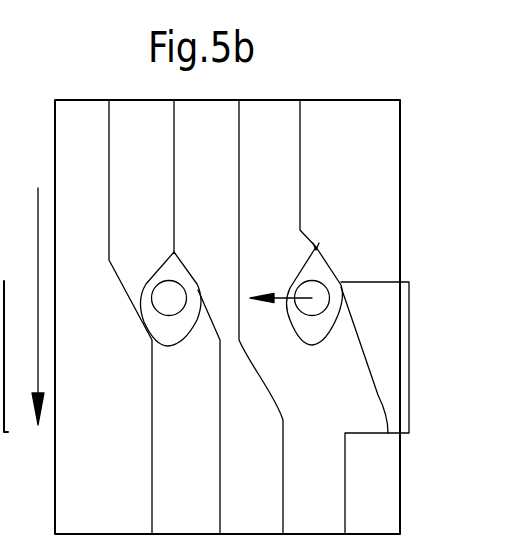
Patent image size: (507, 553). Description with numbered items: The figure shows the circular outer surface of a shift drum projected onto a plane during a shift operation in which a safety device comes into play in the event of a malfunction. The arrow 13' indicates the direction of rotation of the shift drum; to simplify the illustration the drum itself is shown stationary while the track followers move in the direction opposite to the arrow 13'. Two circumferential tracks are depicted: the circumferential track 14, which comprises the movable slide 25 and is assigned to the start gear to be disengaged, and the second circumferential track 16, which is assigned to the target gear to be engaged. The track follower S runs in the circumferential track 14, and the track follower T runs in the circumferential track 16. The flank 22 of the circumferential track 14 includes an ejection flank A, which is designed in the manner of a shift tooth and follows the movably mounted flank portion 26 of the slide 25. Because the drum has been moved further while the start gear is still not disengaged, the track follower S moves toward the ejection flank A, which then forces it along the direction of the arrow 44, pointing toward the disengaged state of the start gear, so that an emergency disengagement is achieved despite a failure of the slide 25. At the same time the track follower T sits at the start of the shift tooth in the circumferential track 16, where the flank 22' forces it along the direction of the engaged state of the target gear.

The circumferential track 16 is at (157, 141).
The circumferential track 14 is at (284, 144).
The flank 22' is at (181, 233).
The flank 22 is at (329, 234).
The ejection flank A is at (316, 247).
The arrow 13' is at (22, 298).
The slide 25 is at (392, 323).
The arrow 44 is at (278, 302).
The track follower S is at (312, 345).
The track follower T is at (168, 347).
The flank portion 26 is at (372, 377).